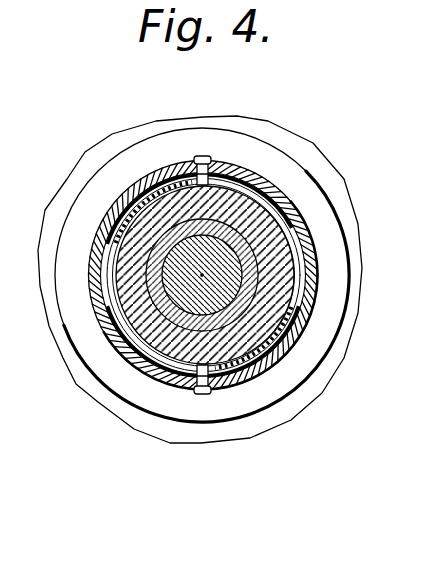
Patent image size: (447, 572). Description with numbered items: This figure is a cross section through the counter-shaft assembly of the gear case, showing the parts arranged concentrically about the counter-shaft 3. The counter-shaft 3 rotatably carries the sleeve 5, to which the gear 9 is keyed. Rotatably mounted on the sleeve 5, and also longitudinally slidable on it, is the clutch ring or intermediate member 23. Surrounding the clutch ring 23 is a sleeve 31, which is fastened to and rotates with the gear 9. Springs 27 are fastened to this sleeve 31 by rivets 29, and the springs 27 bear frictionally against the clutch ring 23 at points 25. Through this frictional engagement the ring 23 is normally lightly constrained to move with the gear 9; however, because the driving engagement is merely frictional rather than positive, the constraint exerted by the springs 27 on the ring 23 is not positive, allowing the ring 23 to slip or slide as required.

The counter-shaft 3 is at (181, 270).
The sleeve 5 is at (158, 298).
The gear 9 is at (114, 418).
The clutch ring 23 is at (127, 282).
The points 25 is at (107, 221).
The springs 27 is at (158, 177).
The rivets 29 is at (203, 157).
The sleeve 31 is at (285, 352).